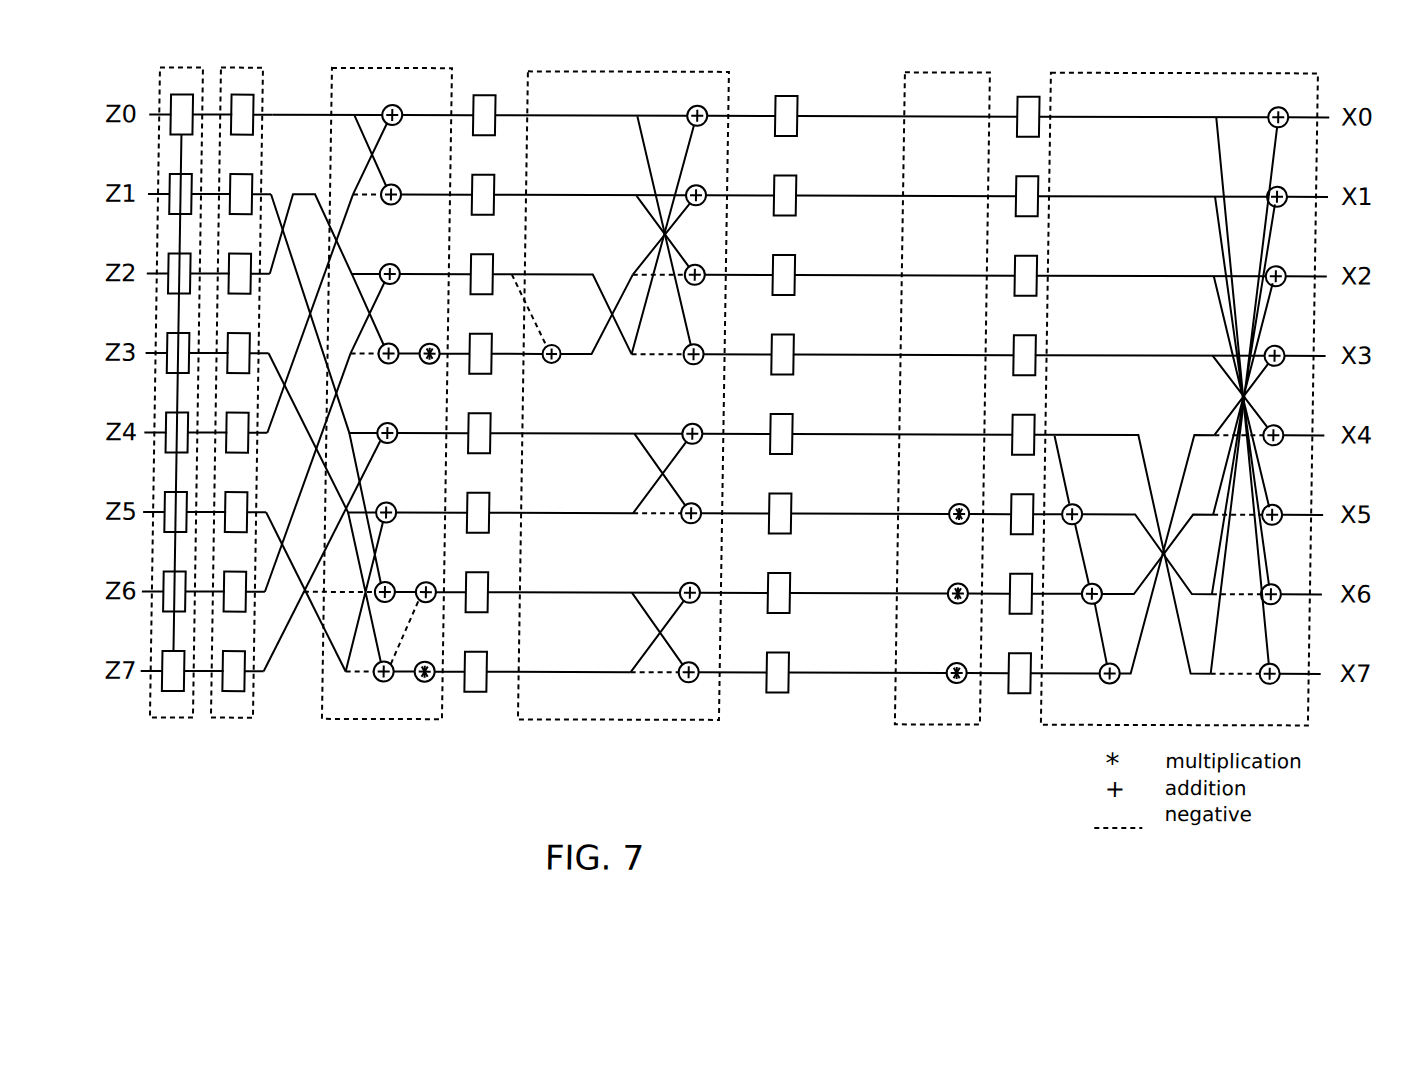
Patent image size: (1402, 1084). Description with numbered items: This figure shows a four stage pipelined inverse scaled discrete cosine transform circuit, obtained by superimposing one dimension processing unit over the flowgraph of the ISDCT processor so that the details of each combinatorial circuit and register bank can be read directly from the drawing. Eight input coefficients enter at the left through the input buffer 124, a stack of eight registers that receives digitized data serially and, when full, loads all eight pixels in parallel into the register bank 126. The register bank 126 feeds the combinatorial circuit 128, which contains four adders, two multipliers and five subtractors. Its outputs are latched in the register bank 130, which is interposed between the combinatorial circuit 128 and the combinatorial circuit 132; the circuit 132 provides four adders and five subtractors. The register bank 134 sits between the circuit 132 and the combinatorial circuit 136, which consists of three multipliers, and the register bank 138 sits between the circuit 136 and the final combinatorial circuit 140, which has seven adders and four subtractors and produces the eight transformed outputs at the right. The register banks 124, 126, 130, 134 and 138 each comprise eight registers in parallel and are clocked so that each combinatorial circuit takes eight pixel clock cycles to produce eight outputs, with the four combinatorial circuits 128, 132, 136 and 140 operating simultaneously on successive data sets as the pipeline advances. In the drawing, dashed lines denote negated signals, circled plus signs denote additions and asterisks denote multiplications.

The input buffer 124 is at (181, 718).
The register bank 126 is at (247, 718).
The combinatorial circuit 128 is at (352, 67).
The register bank 130 is at (489, 693).
The combinatorial circuit 132 is at (600, 70).
The register bank 134 is at (795, 705).
The combinatorial circuit 136 is at (935, 70).
The register bank 138 is at (1022, 705).
The combinatorial circuit 140 is at (1230, 70).